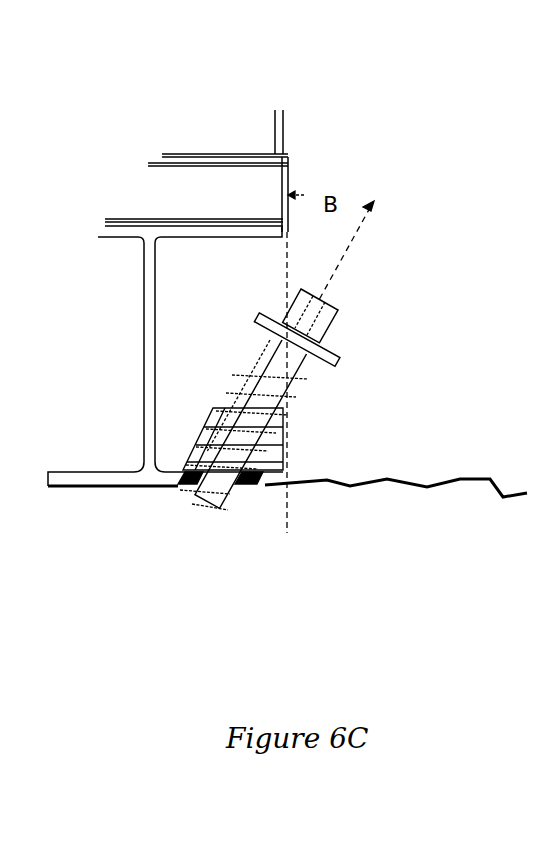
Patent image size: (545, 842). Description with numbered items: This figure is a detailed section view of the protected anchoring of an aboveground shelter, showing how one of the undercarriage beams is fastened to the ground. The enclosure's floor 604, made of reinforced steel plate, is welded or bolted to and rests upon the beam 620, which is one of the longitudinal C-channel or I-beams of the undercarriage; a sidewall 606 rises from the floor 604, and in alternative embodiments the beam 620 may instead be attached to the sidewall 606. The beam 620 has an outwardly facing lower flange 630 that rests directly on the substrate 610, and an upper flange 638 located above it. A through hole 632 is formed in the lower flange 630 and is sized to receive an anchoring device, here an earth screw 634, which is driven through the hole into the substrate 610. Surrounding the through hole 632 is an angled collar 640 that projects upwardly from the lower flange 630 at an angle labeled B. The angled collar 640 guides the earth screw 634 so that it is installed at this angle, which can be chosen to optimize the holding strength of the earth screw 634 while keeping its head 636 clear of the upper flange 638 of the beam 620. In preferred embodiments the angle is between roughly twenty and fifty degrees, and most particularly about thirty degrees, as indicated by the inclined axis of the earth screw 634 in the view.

The floor 604 is at (187, 153).
The sidewall 606 is at (284, 121).
The substrate 610 is at (475, 479).
The beam 620 is at (146, 329).
The lower flange 630 is at (274, 488).
The through hole 632 is at (246, 487).
The earth screw 634 is at (303, 367).
The head 636 is at (343, 318).
The upper flange 638 is at (203, 240).
The angled collar 640 is at (205, 427).